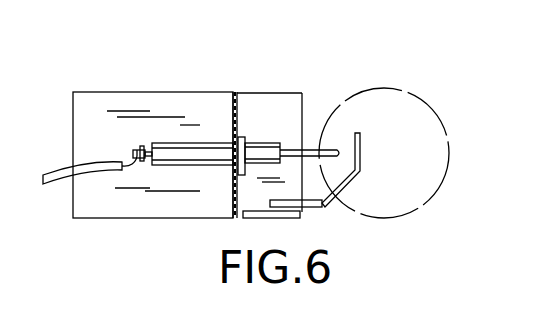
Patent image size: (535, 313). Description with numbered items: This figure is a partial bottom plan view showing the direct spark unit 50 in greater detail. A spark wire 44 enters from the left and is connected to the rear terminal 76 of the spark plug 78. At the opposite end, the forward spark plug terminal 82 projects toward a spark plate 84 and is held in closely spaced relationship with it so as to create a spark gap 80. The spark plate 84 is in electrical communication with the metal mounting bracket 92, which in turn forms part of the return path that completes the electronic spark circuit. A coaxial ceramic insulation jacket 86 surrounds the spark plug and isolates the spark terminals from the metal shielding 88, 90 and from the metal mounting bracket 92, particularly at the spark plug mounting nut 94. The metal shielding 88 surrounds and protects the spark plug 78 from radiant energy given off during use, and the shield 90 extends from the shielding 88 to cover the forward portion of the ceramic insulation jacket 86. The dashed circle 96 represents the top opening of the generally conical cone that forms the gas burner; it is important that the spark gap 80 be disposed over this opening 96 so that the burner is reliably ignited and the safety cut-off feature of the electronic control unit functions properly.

The spark wire 44 is at (64, 183).
The spark unit 50 is at (217, 56).
The rear terminal 76 is at (135, 150).
The spark plug 78 is at (193, 126).
The spark gap 80 is at (367, 118).
The forward spark plug terminal 82 is at (334, 150).
The spark plate 84 is at (361, 158).
The coaxial ceramic insulation jacket 86 is at (263, 152).
The metal shielding 88 is at (92, 97).
The metal shield 90 is at (284, 97).
The mounting bracket 92 is at (232, 200).
The spark plug mounting nut 94 is at (244, 138).
The circle 96 is at (447, 128).